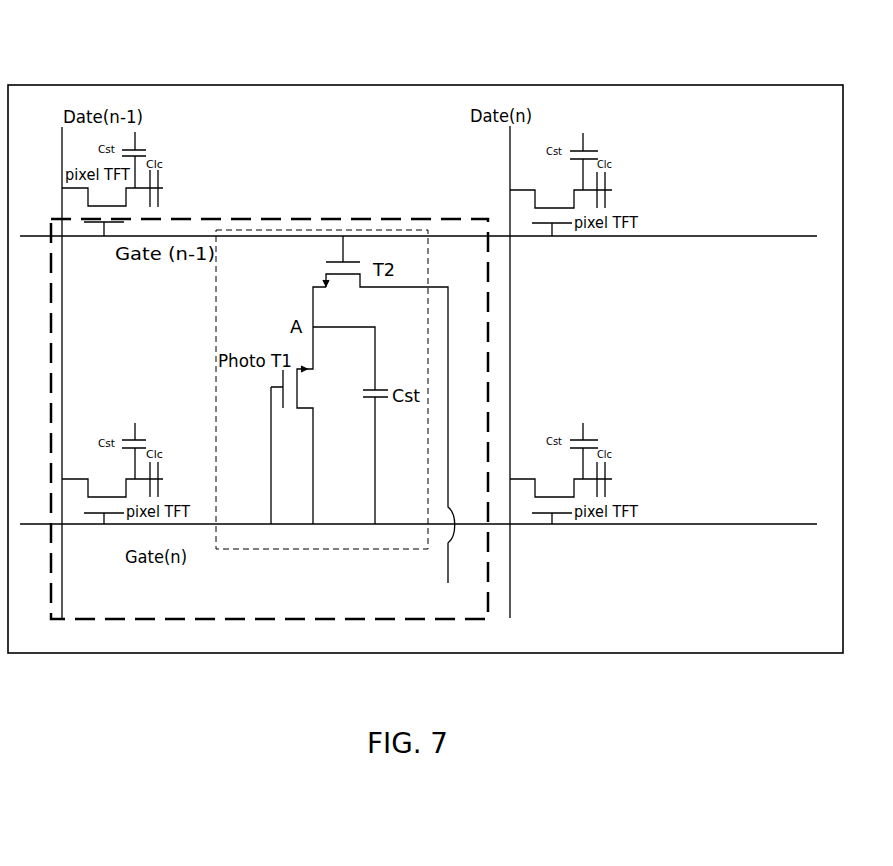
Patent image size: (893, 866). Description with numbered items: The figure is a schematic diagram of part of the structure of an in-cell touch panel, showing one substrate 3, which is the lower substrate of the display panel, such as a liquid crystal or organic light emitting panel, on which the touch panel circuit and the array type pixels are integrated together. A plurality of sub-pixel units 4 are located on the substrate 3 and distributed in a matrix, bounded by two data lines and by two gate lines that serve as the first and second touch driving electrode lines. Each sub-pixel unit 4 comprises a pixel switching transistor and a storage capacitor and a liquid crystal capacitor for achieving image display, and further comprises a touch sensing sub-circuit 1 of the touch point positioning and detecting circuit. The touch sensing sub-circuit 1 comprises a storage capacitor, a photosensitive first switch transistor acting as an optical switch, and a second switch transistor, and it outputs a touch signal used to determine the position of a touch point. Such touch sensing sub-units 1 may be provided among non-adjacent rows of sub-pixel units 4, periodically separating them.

The touch sensing sub-circuit 1 is at (336, 230).
The substrate 3 is at (341, 85).
The sub-pixel units 4 is at (266, 219).